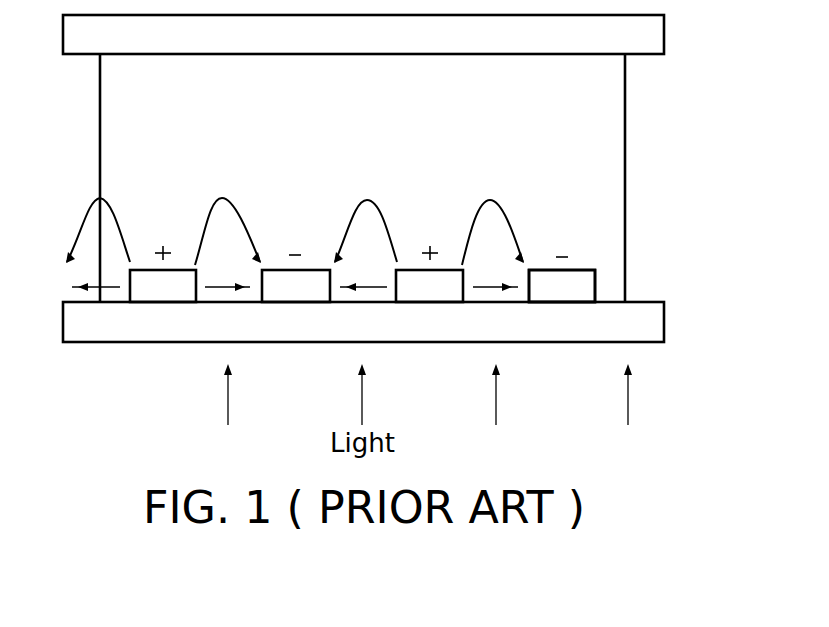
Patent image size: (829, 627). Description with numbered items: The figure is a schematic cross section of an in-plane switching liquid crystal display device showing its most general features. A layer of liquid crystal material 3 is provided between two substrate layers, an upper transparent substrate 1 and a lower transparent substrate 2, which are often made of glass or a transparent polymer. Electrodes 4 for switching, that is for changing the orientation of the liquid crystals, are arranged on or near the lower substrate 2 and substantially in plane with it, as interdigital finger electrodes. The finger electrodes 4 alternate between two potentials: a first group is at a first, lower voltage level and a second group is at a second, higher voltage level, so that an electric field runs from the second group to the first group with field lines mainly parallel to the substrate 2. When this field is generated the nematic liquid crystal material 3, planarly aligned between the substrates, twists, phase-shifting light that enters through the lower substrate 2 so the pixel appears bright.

The upper transparent substrate 1 is at (652, 36).
The lower transparent substrate 2 is at (648, 322).
The liquid crystal material 3 is at (614, 132).
The electrodes 4 is at (599, 262).